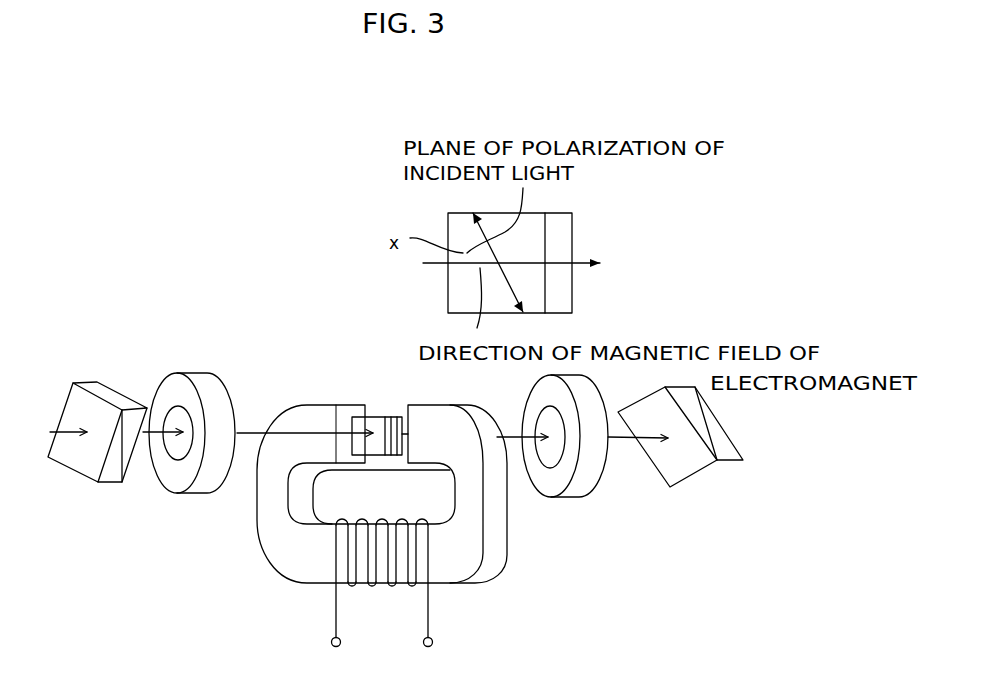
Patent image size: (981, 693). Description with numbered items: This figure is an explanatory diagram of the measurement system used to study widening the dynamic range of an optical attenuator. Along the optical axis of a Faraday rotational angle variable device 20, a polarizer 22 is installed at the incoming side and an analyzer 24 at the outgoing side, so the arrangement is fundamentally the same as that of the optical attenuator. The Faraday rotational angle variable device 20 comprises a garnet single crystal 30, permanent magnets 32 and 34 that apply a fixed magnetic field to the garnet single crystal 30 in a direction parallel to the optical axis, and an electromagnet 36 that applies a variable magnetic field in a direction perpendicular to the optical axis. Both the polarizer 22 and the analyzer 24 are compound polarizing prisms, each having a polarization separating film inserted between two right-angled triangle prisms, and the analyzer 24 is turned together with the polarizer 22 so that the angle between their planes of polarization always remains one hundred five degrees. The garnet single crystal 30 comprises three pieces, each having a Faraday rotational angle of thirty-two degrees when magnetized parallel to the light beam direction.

The Faraday rotational angle variable device 20 is at (303, 373).
The polarizer 22 is at (73, 463).
The analyzer 24 is at (677, 470).
The garnet single crystal 30 is at (453, 303).
The permanent magnet 32 is at (163, 480).
The permanent magnet 34 is at (585, 483).
The electromagnet 36 is at (275, 543).